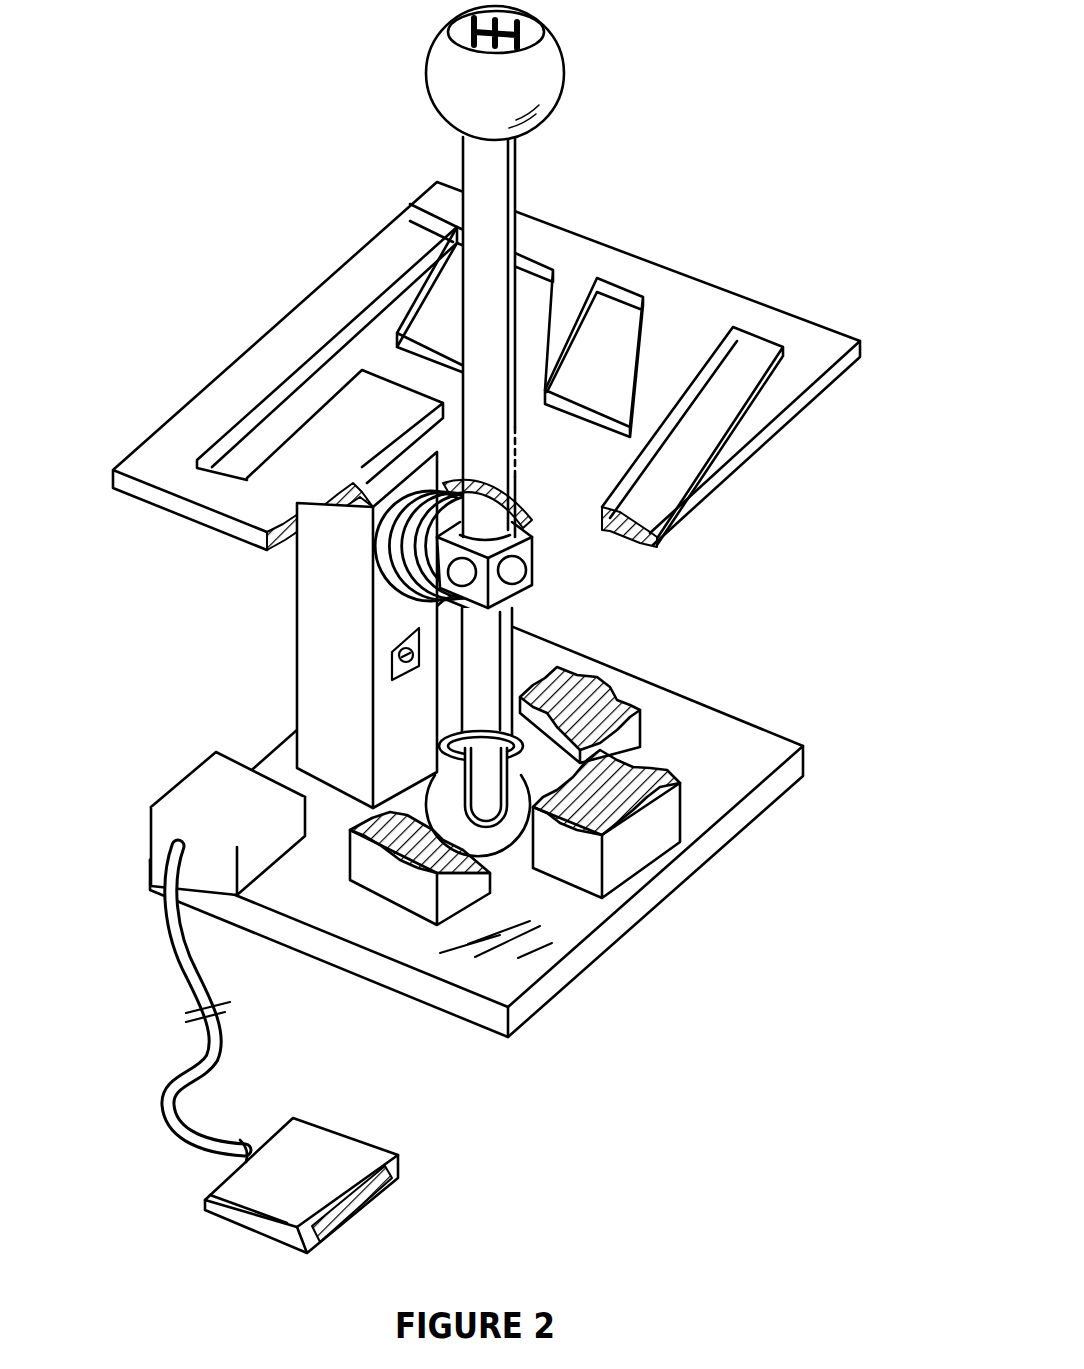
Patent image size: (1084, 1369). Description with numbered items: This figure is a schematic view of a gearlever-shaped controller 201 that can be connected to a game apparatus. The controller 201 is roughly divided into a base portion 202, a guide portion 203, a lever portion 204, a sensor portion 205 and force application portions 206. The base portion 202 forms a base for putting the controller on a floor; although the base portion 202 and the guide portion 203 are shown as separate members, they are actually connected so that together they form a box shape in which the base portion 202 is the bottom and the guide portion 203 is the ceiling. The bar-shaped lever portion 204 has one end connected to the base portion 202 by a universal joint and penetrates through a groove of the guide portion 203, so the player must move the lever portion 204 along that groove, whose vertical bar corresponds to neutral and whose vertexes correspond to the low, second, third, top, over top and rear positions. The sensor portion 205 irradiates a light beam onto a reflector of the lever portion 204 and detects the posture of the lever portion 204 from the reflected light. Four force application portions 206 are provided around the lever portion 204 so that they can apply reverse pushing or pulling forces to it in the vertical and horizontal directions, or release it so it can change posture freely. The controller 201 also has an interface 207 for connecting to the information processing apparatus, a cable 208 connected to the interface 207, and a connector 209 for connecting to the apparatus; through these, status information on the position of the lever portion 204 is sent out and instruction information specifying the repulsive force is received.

The gearlever-shaped controller 201 is at (760, 138).
The base portion 202 is at (720, 730).
The guide portion 203 is at (770, 325).
The lever portion 204 is at (500, 171).
The sensor portion 205 is at (393, 652).
The force application portions 206 is at (377, 546).
The interface 207 is at (205, 797).
The cable 208 is at (198, 946).
The connector 209 is at (238, 1220).